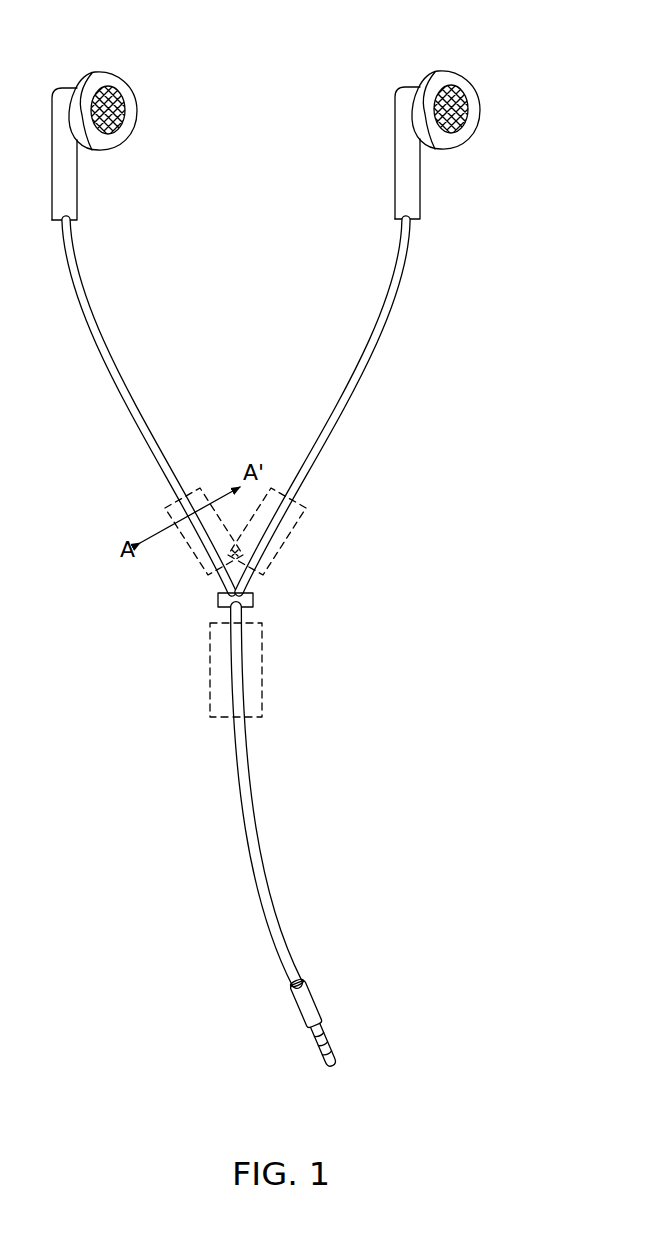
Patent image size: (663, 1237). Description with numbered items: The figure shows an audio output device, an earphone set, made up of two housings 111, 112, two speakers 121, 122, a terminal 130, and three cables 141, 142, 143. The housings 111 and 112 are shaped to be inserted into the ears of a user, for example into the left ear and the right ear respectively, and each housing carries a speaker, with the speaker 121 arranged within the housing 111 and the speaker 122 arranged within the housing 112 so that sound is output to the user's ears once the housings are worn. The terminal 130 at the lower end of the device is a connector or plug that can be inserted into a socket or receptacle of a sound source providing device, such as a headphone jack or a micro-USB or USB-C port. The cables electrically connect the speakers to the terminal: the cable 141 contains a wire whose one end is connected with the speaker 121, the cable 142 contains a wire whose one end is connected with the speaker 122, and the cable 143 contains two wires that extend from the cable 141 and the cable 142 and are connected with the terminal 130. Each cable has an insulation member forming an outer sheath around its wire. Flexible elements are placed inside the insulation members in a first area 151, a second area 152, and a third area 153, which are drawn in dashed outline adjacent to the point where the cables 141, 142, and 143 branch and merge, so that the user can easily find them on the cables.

The housing 111 is at (128, 78).
The housing 112 is at (405, 88).
The speaker 121 is at (120, 118).
The speaker 122 is at (468, 122).
The terminal 130 is at (330, 1036).
The cable 141 is at (108, 367).
The cable 142 is at (378, 356).
The cable 143 is at (268, 884).
The first area 151 is at (190, 557).
The second area 152 is at (280, 557).
The third area 153 is at (210, 697).